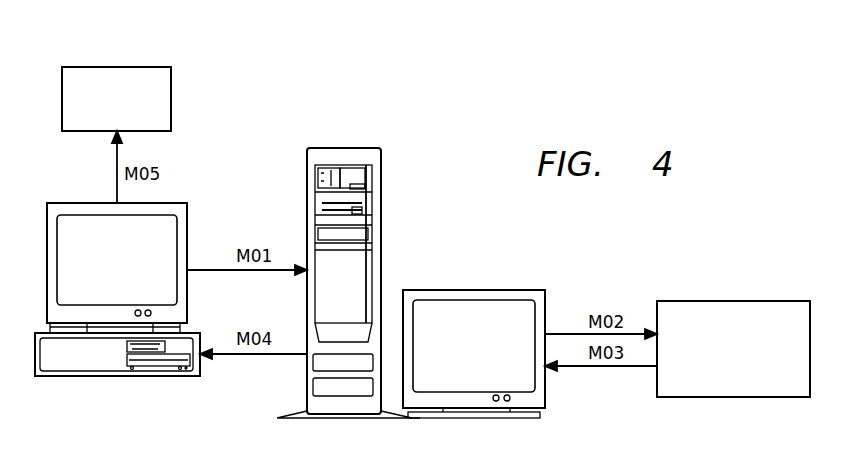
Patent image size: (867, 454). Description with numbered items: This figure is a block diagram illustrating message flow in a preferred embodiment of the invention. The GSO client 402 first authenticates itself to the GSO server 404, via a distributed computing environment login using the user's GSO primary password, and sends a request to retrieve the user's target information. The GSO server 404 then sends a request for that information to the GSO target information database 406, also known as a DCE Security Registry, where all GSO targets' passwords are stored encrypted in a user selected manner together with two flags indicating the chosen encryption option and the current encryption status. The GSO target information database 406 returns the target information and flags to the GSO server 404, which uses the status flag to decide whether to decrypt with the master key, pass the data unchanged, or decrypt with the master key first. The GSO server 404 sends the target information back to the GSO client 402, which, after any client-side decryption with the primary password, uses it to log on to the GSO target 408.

The GSO client 402 is at (97, 270).
The GSO server 404 is at (454, 356).
The GSO target information database 406 is at (733, 301).
The GSO target 408 is at (117, 67).